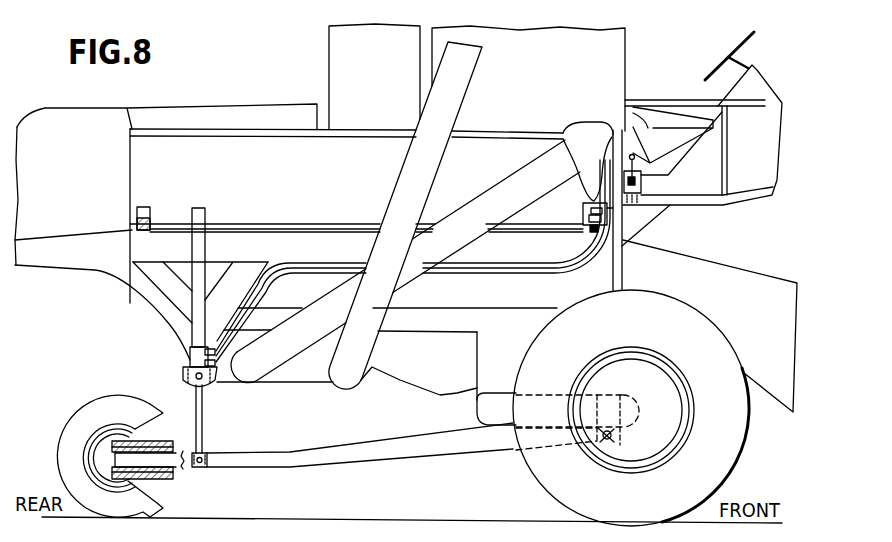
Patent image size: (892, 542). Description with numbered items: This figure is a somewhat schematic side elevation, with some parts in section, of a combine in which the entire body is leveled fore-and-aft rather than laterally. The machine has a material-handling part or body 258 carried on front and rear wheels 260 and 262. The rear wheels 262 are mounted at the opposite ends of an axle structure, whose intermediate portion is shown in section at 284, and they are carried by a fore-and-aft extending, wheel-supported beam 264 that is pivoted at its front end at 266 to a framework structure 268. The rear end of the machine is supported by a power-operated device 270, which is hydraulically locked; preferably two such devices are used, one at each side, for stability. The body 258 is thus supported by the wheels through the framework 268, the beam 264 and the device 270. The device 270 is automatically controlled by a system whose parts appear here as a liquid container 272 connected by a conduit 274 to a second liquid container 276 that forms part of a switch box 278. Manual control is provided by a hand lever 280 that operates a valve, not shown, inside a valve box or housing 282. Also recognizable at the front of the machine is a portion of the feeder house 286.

The body 258 is at (263, 107).
The front wheels 260 is at (546, 488).
The rear wheels 262 is at (79, 425).
The beam 264 is at (363, 452).
The pivot 266 is at (613, 437).
The framework structure 268 is at (497, 393).
The power-operated device 270 is at (206, 214).
The liquid container 272 is at (145, 207).
The conduit 274 is at (320, 225).
The second liquid container 276 is at (590, 232).
The switch box 278 is at (583, 210).
The hand lever 280 is at (629, 158).
The valve box 282 is at (642, 184).
The axle structure 284 is at (174, 480).
The feeder house 286 is at (737, 257).